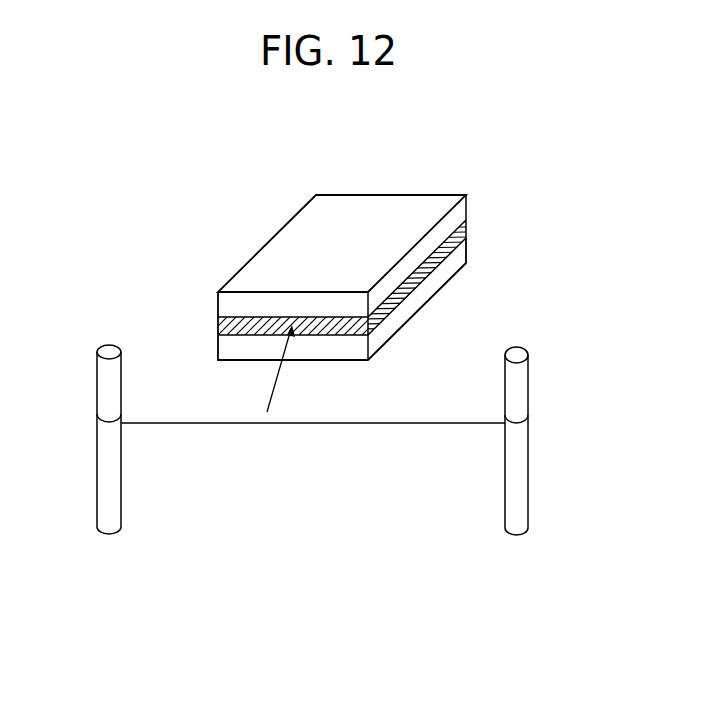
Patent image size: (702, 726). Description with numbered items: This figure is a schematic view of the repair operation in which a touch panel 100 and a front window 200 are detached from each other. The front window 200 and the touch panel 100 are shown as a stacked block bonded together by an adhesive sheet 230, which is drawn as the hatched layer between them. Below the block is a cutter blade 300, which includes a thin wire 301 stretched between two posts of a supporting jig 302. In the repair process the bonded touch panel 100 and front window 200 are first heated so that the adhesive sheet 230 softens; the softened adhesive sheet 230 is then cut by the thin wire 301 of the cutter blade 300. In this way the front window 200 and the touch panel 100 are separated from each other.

The front window 200 is at (393, 202).
The adhesive sheet 230 is at (447, 253).
The touch panel 100 is at (405, 323).
The cutter blade 300 is at (323, 491).
The thin wire 301 is at (405, 423).
The supporting jig 302 is at (397, 588).